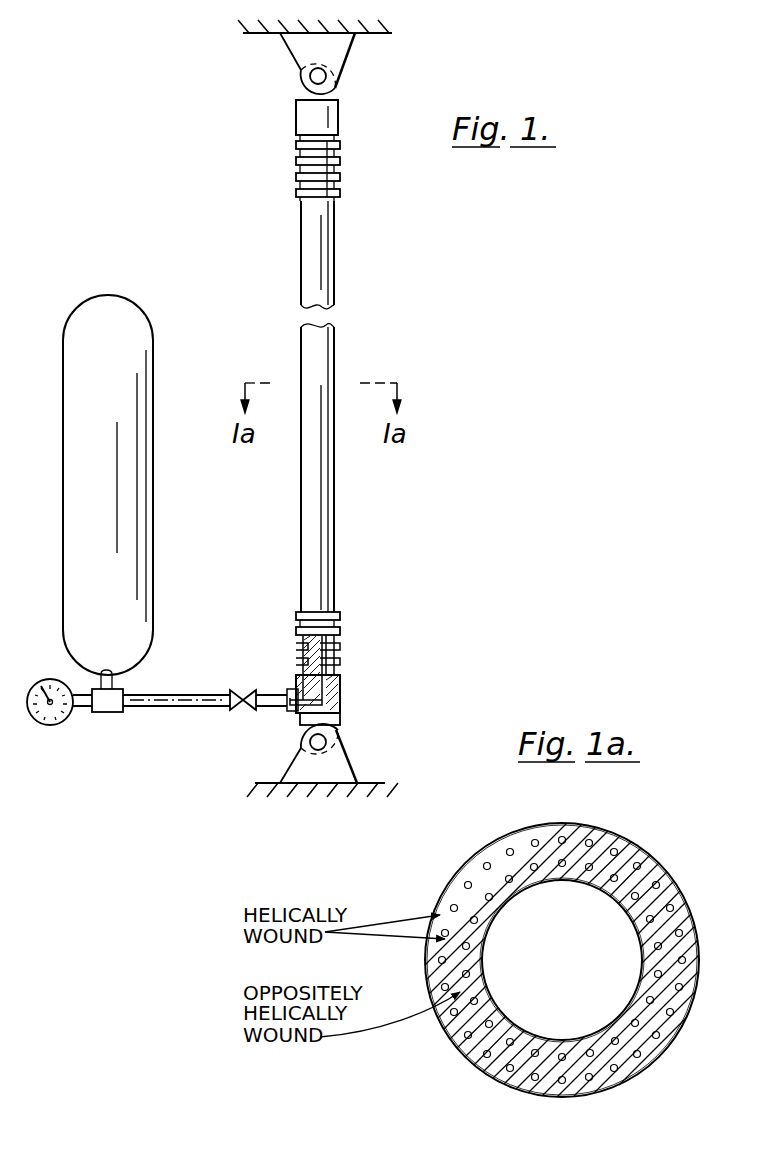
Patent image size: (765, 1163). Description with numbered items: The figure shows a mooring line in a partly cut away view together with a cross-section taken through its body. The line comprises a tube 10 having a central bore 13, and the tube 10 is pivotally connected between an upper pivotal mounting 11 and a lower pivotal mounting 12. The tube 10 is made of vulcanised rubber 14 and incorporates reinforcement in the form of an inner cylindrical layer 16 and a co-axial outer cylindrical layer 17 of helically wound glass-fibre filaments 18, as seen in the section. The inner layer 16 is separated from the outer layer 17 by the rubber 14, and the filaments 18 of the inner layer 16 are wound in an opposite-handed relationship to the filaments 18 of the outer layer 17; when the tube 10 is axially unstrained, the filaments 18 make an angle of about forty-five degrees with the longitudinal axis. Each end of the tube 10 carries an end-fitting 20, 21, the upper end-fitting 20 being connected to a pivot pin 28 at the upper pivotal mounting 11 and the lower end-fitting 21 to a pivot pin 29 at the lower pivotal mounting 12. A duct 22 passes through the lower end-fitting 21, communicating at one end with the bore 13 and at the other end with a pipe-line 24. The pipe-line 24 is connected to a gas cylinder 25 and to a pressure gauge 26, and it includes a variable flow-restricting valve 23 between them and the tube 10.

In FIG. 1, the tube 10 is at (334, 556).
In FIG. 1A, the tube 10 is at (648, 1084).
In FIG. 1, the upper pivotal mounting 11 is at (338, 56).
In FIG. 1, the lower pivotal mounting 12 is at (345, 770).
In FIG. 1A, the bore 13 is at (578, 966).
In FIG. 1A, the vulcanised rubber 14 is at (673, 978).
In FIG. 1A, the inner cylindrical layer 16 is at (613, 872).
In FIG. 1A, the outer cylindrical layer 17 is at (655, 879).
In FIG. 1A, the glass-fibre filaments 18 is at (660, 888).
In FIG. 1, the end-fitting 20 is at (340, 177).
In FIG. 1, the lower end-fitting 21 is at (340, 631).
In FIG. 1, the duct 22 is at (322, 677).
In FIG. 1, the variable flow-restricting valve 23 is at (244, 712).
In FIG. 1, the pipe-line 24 is at (196, 707).
In FIG. 1, the gas cylinder 25 is at (138, 567).
In FIG. 1, the pressure gauge 26 is at (58, 725).
In FIG. 1, the pivot pin 28 is at (322, 79).
In FIG. 1, the pivot pin 29 is at (323, 743).